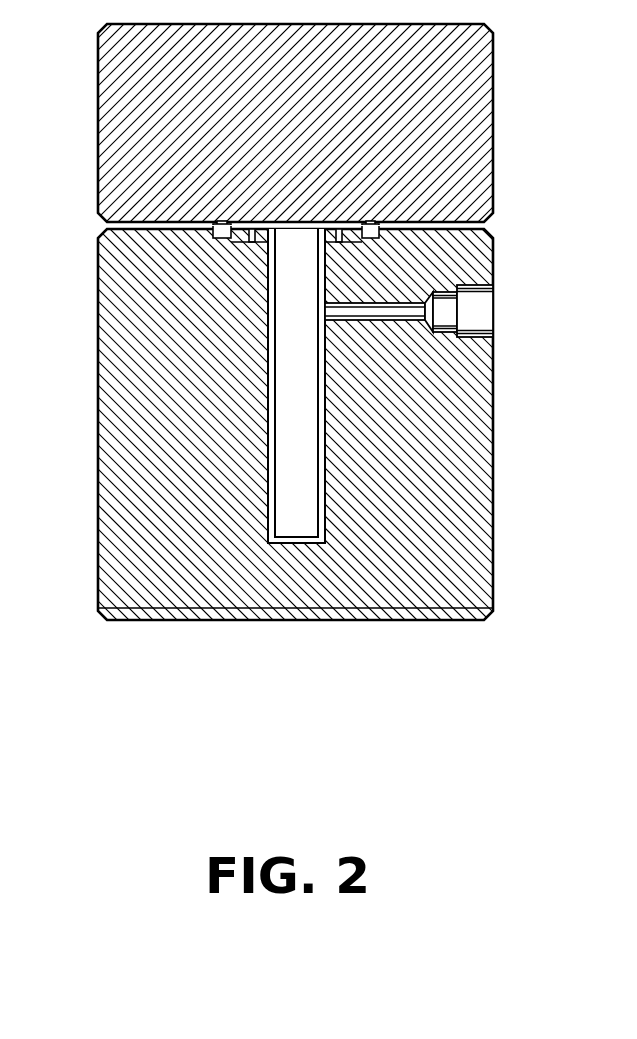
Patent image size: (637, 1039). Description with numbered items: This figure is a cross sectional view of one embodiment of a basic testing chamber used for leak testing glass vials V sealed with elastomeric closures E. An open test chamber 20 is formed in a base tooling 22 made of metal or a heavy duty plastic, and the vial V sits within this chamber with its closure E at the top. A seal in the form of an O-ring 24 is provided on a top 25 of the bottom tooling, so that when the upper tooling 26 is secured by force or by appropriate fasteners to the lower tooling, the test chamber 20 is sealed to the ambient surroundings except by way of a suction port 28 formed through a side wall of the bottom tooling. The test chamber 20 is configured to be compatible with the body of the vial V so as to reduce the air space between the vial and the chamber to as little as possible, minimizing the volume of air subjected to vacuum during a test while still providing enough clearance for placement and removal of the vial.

The test chamber 20 is at (300, 386).
The base tooling 22 is at (486, 560).
The O-ring 24 is at (371, 222).
The top of the bottom tooling 25 is at (138, 227).
The upper tooling 26 is at (105, 126).
The suction port 28 is at (487, 308).
The elastomeric closure E is at (298, 232).
The vial V is at (268, 468).